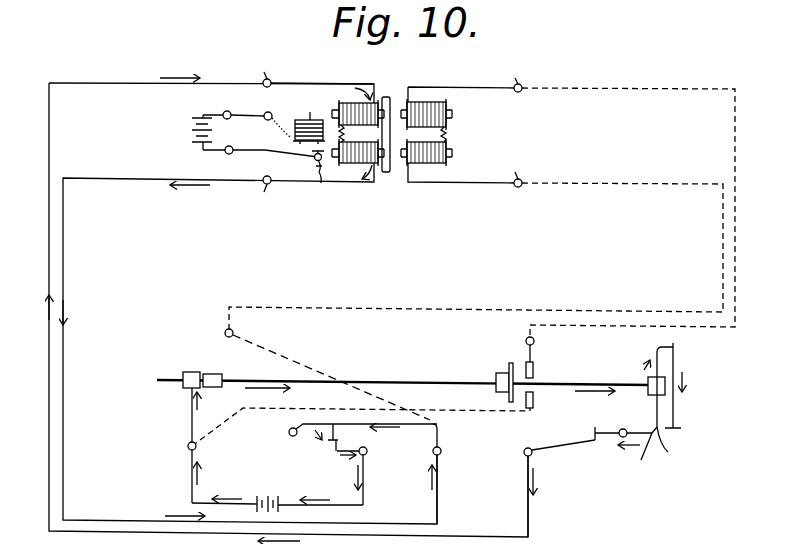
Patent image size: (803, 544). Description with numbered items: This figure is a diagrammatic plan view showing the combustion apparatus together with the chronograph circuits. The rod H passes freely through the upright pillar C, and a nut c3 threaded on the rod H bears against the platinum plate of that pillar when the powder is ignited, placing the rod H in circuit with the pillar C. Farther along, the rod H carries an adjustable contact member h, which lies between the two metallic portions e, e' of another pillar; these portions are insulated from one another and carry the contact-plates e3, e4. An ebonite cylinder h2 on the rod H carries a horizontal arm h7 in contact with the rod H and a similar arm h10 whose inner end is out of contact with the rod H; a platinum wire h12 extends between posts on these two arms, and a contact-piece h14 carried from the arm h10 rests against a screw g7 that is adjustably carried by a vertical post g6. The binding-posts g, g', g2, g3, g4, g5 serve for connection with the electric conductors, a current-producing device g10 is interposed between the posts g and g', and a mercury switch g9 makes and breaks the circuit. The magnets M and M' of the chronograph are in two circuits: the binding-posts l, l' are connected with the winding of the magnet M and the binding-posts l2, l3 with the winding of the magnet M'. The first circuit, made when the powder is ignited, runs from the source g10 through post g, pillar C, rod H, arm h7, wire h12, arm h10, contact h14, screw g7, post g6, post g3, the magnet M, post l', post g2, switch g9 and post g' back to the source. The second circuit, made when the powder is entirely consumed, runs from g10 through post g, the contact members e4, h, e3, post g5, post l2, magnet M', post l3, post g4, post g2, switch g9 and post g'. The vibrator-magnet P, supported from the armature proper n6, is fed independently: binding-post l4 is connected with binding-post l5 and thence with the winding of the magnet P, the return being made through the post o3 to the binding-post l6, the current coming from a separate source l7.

The binding-post l is at (263, 71).
The binding-post l' is at (263, 194).
The binding-post l2 is at (511, 76).
The binding-post l3 is at (511, 171).
The binding-post l4 is at (227, 103).
The binding-post l5 is at (322, 68).
The binding-post l6 is at (237, 160).
The source of current l7 is at (240, 136).
The armature proper n6 is at (388, 97).
The magnet M is at (351, 125).
The magnet M' is at (457, 135).
The vibrator-magnet P is at (294, 117).
The post o3 is at (316, 176).
The rod H is at (389, 381).
The upright pillar C is at (186, 372).
The nut c3 is at (209, 374).
The adjustable contact member h is at (509, 364).
The ebonite cylinder h2 is at (666, 386).
The horizontal arm h7 is at (662, 343).
The arm h10 is at (666, 440).
The platinum wire h12 is at (676, 402).
The contact-piece h14 is at (636, 461).
The metallic portion e is at (538, 370).
The metallic portion e' is at (540, 401).
The contact-plate e3 is at (525, 360).
The contact-plate e4 is at (526, 402).
The binding-post g is at (177, 445).
The binding-post g' is at (374, 476).
The binding-post g2 is at (441, 451).
The binding-post g3 is at (559, 480).
The binding-post g4 is at (233, 331).
The binding-post g5 is at (534, 340).
The vertical post g6 is at (620, 430).
The screw g7 is at (638, 432).
The mercury switch g9 is at (290, 436).
The current-producing device g10 is at (268, 497).